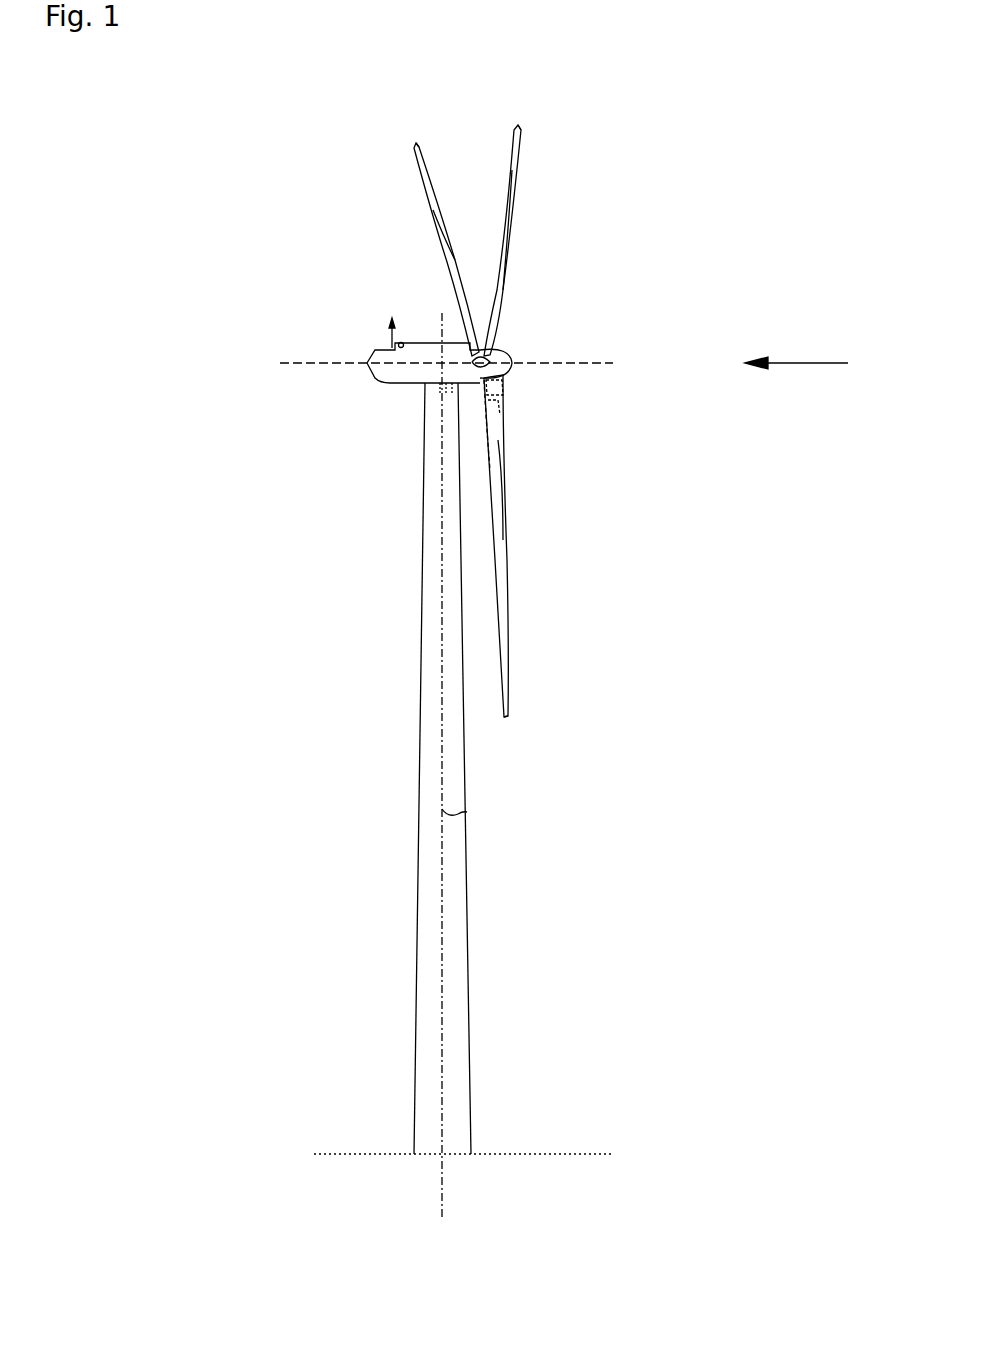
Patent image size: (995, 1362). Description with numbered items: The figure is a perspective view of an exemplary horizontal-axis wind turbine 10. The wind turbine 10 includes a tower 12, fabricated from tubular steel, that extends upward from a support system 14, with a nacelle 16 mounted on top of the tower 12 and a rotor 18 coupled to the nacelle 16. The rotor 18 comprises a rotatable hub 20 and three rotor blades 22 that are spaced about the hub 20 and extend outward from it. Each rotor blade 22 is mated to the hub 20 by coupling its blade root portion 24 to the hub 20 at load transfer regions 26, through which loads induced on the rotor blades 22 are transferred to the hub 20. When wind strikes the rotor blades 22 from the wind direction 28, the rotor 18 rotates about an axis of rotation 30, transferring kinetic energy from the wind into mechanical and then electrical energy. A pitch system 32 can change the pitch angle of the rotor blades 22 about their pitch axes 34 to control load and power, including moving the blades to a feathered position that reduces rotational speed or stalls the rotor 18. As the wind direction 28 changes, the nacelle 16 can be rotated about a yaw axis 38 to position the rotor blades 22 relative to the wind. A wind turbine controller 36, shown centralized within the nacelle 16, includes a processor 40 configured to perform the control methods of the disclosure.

The wind turbine 10 is at (202, 155).
The tower 12 is at (416, 925).
The support system 14 is at (372, 1152).
The nacelle 16 is at (400, 385).
The rotor 18 is at (527, 265).
The rotatable hub 20 is at (512, 358).
The rotor blade 22 is at (433, 210).
The blade root portion 24 is at (497, 470).
The load transfer regions 26 is at (500, 392).
The wind direction 28 is at (812, 363).
The axis of rotation 30 is at (595, 368).
The pitch system 32 is at (495, 405).
The pitch axes 34 is at (410, 150).
The wind turbine controller 36 is at (450, 395).
The yaw axis 38 is at (467, 812).
The processor 40 is at (455, 340).